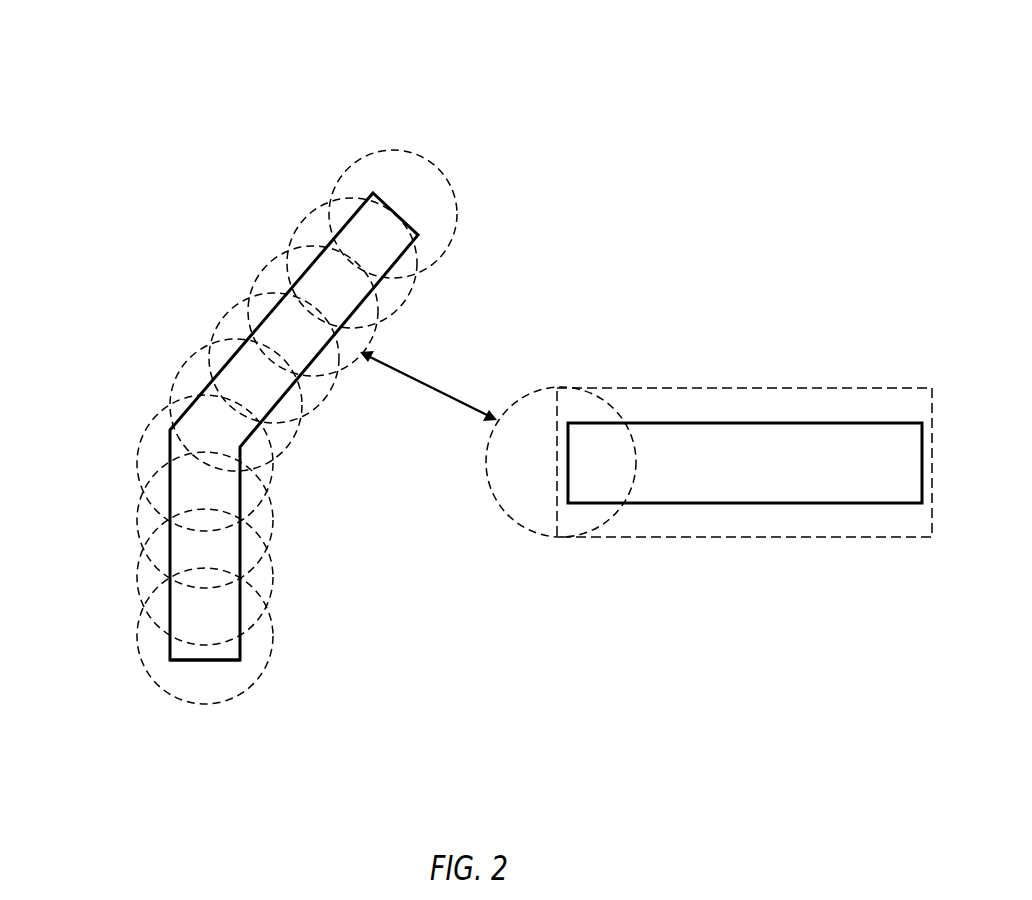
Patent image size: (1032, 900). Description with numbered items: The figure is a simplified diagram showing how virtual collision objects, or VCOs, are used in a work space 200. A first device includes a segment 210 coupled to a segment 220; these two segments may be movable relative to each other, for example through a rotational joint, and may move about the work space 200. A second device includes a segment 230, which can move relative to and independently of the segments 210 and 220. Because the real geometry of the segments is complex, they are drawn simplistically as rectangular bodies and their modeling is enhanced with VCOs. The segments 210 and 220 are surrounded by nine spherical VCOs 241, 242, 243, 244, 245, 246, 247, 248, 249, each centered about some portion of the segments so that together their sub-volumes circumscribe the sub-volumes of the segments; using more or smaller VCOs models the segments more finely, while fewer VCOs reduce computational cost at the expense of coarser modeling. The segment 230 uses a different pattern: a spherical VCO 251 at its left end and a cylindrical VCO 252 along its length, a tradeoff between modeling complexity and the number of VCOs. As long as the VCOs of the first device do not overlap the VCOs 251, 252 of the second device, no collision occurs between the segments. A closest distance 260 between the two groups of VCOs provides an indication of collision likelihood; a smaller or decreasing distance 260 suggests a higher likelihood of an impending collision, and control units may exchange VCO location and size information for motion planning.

The work space 200 is at (228, 53).
The segment 210 is at (373, 191).
The segment 220 is at (170, 661).
The segment 230 is at (860, 421).
The virtual collision object 241 is at (417, 155).
The virtual collision object 242 is at (308, 213).
The virtual collision object 243 is at (262, 267).
The virtual collision object 244 is at (220, 322).
The virtual collision object 245 is at (183, 367).
The virtual collision object 246 is at (140, 433).
The virtual collision object 247 is at (138, 518).
The virtual collision object 248 is at (135, 577).
The virtual collision object 249 is at (272, 638).
The spherical virtual collision object 251 is at (513, 522).
The cylindrical virtual collision object 252 is at (700, 387).
The closest distance 260 is at (438, 388).